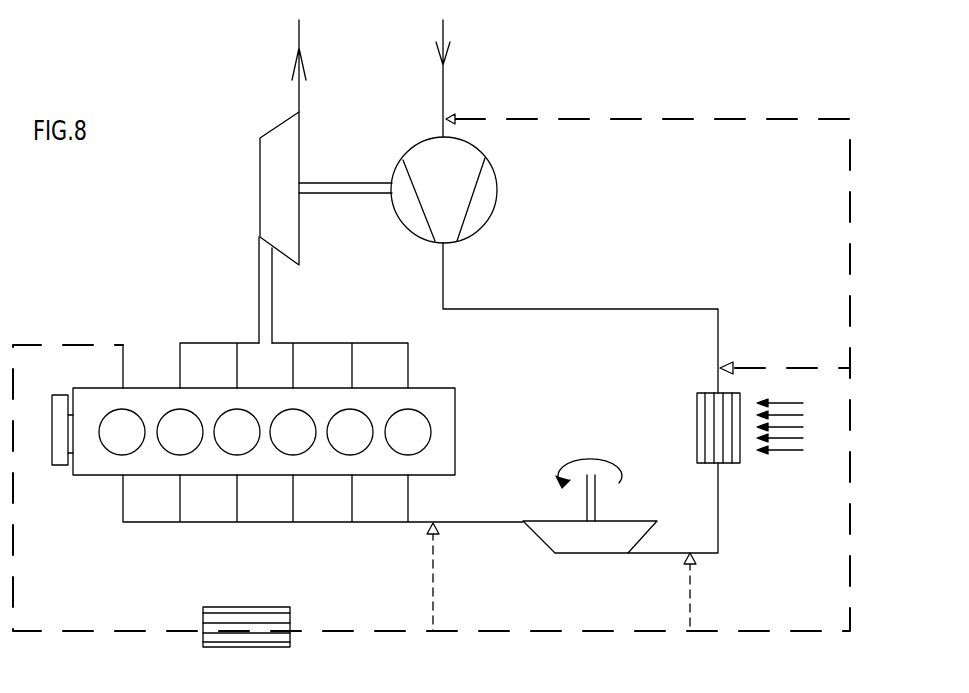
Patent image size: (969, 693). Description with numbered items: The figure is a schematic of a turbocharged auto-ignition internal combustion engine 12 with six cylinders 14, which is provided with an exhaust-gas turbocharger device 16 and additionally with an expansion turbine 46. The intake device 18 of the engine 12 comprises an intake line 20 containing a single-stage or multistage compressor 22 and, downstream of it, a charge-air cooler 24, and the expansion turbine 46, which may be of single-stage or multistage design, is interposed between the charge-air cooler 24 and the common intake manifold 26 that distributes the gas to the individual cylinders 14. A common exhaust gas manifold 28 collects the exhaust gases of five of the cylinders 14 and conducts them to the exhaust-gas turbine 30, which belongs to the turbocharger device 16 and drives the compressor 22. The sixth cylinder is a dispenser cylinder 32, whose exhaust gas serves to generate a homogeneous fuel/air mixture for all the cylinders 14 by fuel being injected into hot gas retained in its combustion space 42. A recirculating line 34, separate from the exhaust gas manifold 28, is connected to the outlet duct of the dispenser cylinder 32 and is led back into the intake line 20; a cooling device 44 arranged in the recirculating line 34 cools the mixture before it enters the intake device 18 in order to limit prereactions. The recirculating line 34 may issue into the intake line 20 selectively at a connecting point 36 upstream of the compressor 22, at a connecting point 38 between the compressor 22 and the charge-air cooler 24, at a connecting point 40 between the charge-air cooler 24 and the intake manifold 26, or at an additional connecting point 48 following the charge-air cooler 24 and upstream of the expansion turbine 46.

The auto-ignition internal combustion engine 12 is at (291, 384).
The cylinders 14 is at (301, 408).
The exhaust-gas turbocharger device 16 is at (604, 78).
The intake device 18 is at (646, 235).
The intake line 20 is at (648, 306).
The compressor 22 is at (490, 183).
The charge-air cooler 24 is at (703, 407).
The intake manifold 26 is at (270, 503).
The exhaust gas manifold 28 is at (325, 360).
The exhaust-gas turbine 30 is at (283, 163).
The dispenser cylinder 32 is at (100, 489).
The recirculating line 34 is at (65, 342).
The connecting point 36 is at (447, 115).
The connecting point 38 is at (724, 362).
The connecting point 40 is at (440, 528).
The combustion space 42 is at (133, 427).
The cooling device 44 is at (210, 618).
The expansion turbine 46 is at (585, 540).
The connecting point 48 is at (712, 557).